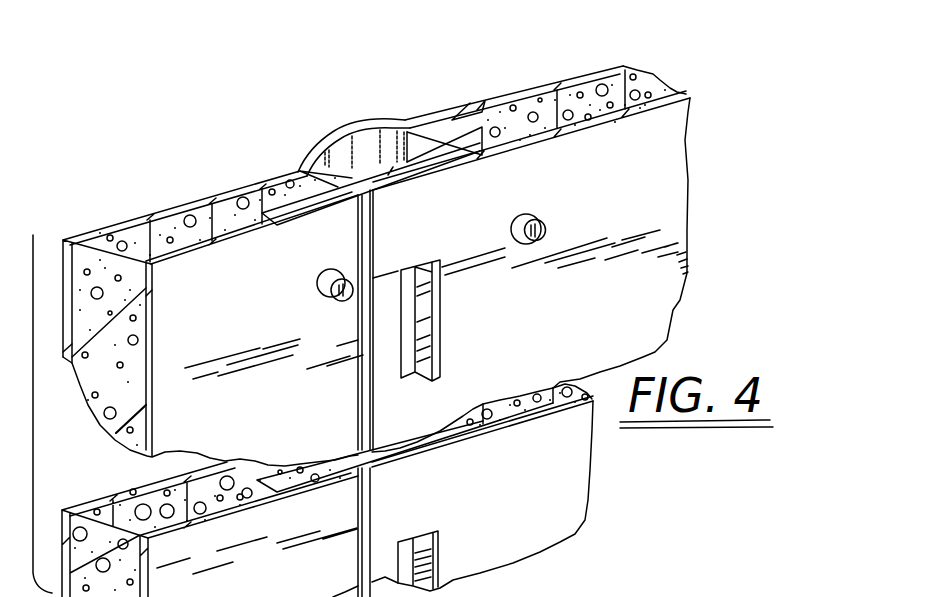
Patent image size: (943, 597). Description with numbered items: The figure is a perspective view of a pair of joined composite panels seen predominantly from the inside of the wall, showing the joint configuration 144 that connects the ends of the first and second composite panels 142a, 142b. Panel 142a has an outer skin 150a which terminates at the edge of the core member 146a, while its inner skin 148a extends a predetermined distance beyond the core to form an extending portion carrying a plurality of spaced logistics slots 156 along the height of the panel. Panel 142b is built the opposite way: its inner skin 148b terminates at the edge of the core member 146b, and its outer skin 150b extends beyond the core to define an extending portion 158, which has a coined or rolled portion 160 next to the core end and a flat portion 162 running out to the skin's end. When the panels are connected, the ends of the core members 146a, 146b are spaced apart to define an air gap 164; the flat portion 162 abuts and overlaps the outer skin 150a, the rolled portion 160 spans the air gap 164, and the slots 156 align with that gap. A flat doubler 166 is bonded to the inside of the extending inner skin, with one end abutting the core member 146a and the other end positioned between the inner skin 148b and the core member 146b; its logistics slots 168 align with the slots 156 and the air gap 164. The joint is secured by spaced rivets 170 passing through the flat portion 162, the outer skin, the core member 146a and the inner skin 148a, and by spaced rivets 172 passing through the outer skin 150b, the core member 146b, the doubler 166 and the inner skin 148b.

The composite panel 142a is at (676, 236).
The composite panel 142b is at (79, 234).
The joint configuration 144 is at (414, 104).
The core member 146a is at (648, 89).
The core member 146b is at (231, 208).
The inner skin 148a is at (670, 97).
The inner skin 148b is at (192, 255).
The outer skin 150a is at (581, 81).
The outer skin 150b is at (151, 208).
The logistics slots 156 is at (430, 358).
The extending portion 158 is at (313, 140).
The coined or rolled portion 160 is at (347, 128).
The flat portion 162 is at (448, 107).
The air gap 164 is at (362, 154).
The doubler 166 is at (408, 174).
The logistics slots 168 is at (426, 300).
The rivets 170 is at (542, 236).
The rivets 172 is at (340, 292).